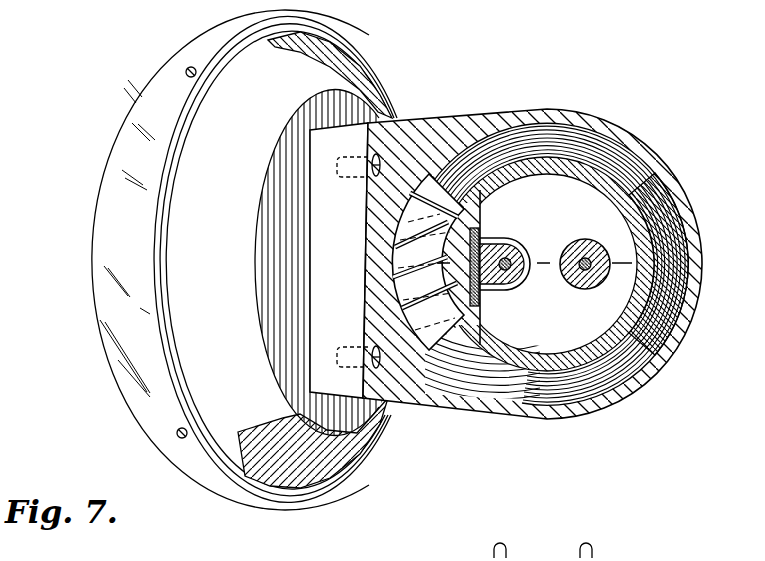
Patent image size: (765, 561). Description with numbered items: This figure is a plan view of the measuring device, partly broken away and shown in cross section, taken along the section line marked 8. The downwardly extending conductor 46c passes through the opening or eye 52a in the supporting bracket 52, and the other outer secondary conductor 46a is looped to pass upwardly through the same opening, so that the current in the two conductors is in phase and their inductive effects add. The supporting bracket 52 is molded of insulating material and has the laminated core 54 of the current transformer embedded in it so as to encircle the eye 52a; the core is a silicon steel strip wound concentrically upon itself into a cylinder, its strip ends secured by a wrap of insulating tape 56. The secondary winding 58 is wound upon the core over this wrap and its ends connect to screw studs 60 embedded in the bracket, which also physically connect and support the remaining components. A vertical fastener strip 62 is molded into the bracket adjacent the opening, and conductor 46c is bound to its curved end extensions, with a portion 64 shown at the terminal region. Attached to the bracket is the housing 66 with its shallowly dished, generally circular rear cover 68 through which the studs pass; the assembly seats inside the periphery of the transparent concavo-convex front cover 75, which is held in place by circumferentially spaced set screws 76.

The section line 8- 8 is at (303, 259).
The outer secondary conductor 46a is at (584, 291).
The downwardly extending conductor 46c is at (513, 240).
The supporting bracket 52 is at (532, 251).
The eye 52a is at (577, 182).
The laminated core 54 is at (593, 126).
The insulating tape 56 is at (468, 350).
The secondary winding 58 is at (390, 270).
The screw studs 60 is at (358, 157).
The vertical fastener strip 62 is at (481, 306).
The terminal lip 64 is at (527, 282).
The housing 66 is at (150, 62).
The rear cover 68 is at (308, 262).
The front cover 75 is at (112, 356).
The set screws 76 is at (187, 79).